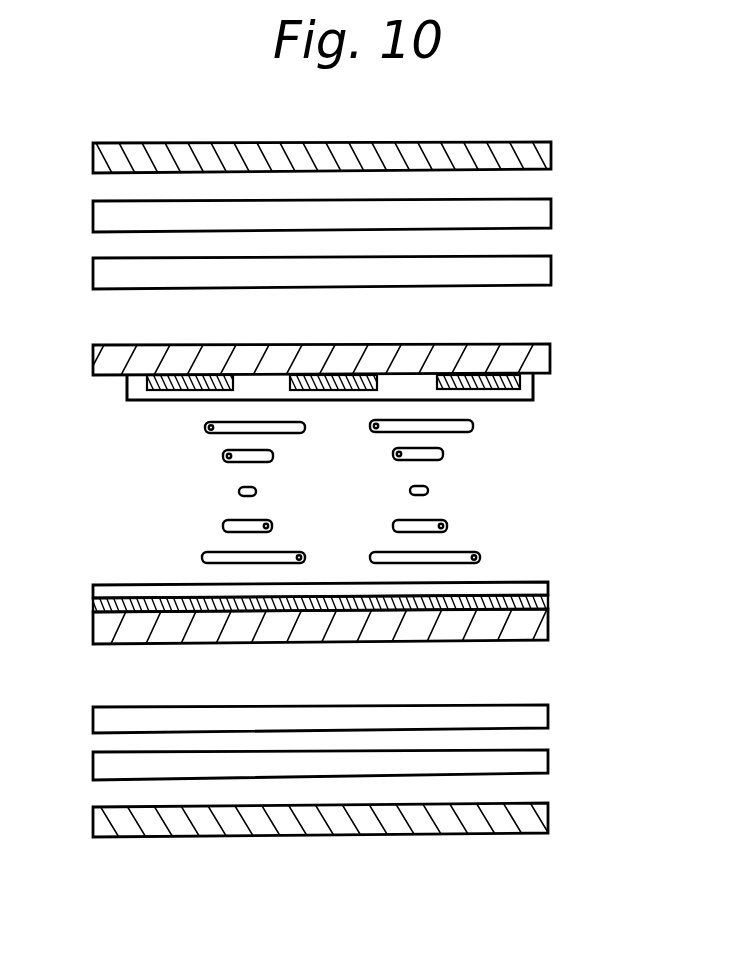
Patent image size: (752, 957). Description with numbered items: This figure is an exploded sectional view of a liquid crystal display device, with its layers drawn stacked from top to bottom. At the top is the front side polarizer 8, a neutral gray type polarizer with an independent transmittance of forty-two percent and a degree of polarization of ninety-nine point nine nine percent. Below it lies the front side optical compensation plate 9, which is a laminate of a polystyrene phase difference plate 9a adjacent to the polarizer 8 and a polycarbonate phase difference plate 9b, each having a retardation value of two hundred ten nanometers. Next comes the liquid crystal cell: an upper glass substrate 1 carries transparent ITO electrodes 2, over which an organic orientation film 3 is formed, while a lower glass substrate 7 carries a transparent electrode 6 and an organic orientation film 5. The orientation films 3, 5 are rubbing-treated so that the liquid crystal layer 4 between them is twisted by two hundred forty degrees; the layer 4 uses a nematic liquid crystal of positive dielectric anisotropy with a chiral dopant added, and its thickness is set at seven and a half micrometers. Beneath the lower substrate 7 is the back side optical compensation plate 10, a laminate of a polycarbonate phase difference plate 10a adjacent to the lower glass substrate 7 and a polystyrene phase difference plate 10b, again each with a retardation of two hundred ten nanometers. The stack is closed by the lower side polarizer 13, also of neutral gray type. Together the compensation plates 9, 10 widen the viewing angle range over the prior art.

The glass substrate 1 is at (548, 362).
The transparent electrode 2 is at (533, 381).
The organic orientation film 3 is at (533, 400).
The liquid crystal layer 4 is at (200, 503).
The organic orientation film 5 is at (541, 589).
The transparent electrode 6 is at (541, 603).
The glass substrate 7 is at (541, 631).
The polarizer 8 is at (551, 160).
The front side optical compensation plate 9 is at (633, 198).
The polystyrene phase difference plate 9a is at (551, 215).
The polycarbonate phase difference plate 9b is at (551, 282).
The back side optical compensation plate 10 is at (643, 693).
The polycarbonate phase difference plate 10a is at (541, 715).
The polystyrene phase difference plate 10b is at (541, 760).
The polarizer 13 is at (541, 823).